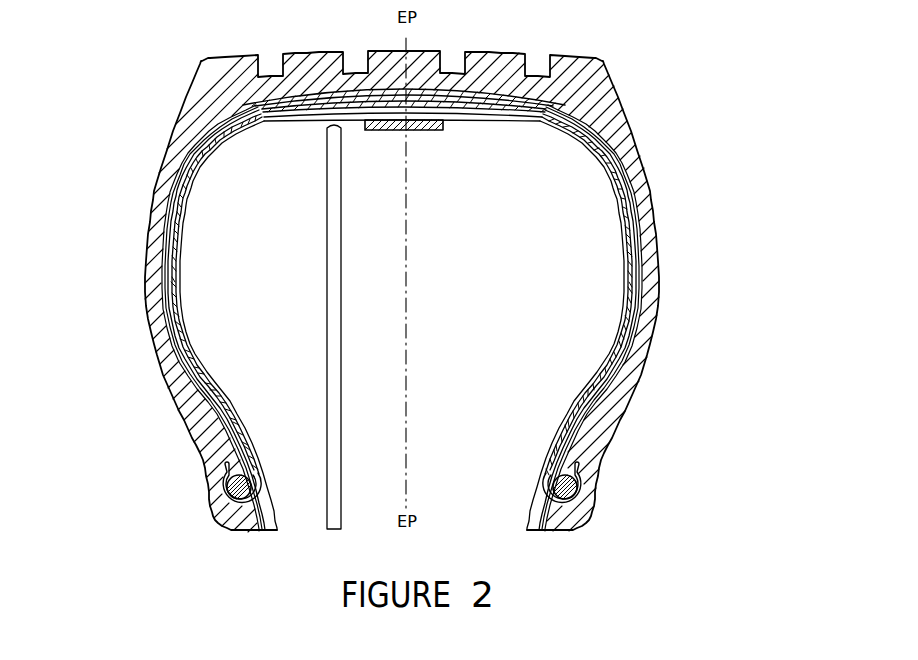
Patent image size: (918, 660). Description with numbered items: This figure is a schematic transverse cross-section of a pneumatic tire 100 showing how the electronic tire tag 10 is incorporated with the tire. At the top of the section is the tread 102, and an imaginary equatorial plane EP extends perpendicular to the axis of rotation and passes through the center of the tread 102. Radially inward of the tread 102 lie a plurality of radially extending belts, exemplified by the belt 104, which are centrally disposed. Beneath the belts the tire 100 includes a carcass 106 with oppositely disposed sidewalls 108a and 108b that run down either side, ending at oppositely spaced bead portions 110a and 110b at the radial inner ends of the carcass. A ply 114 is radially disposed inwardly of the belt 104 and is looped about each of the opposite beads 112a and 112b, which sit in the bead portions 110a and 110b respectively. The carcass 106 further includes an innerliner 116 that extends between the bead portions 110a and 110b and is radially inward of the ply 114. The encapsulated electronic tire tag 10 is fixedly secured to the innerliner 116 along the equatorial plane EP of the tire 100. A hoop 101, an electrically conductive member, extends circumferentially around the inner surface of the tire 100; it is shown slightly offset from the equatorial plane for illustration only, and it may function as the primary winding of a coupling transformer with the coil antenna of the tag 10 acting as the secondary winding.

The pneumatic tire 100 is at (490, 57).
The tread 102 is at (210, 58).
The belt 104 is at (262, 113).
The carcass 106 is at (657, 247).
The sidewall 108a is at (625, 116).
The sidewall 108b is at (164, 152).
The bead portion 110a is at (617, 465).
The bead portion 110b is at (174, 481).
The bead 112a is at (583, 497).
The bead 112b is at (212, 498).
The ply 114 is at (598, 388).
The innerliner 116 is at (508, 124).
The electronic tire tag 10 is at (388, 131).
The hoop 101 is at (341, 356).